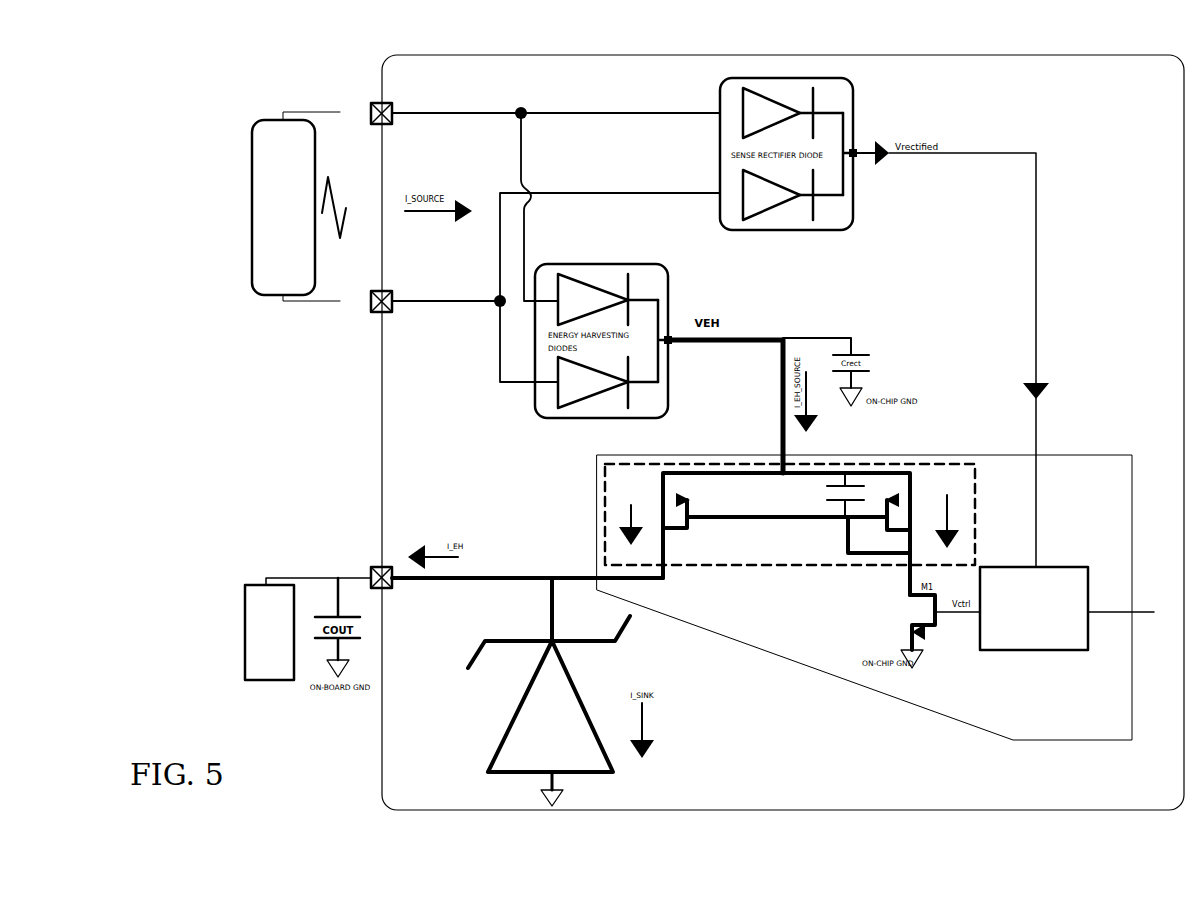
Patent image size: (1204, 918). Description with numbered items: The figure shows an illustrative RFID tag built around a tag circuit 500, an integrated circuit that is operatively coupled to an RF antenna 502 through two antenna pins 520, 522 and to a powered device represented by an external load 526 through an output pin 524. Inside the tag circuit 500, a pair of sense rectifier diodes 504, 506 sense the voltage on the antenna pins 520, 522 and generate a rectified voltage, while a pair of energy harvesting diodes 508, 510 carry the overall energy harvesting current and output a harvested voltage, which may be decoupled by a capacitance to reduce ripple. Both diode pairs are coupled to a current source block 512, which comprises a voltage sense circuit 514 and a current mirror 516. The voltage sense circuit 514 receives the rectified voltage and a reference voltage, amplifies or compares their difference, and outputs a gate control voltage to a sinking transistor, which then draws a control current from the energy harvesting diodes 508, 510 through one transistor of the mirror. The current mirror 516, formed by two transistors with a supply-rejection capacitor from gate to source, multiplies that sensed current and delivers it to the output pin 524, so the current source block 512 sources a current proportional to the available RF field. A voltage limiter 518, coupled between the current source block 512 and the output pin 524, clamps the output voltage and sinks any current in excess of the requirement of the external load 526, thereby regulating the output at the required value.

The tag circuit 500 is at (783, 432).
The RF antenna 502 is at (299, 206).
The sense rectifier diode 504 is at (793, 113).
The sense rectifier diode 506 is at (793, 195).
The energy harvesting diode 508 is at (608, 299).
The energy harvesting diode 510 is at (608, 382).
The current source block 512 is at (864, 597).
The voltage sense circuit 514 is at (1067, 608).
The current mirror 516 is at (770, 571).
The voltage limiter 518 is at (549, 692).
The antenna pin 520 is at (372, 102).
The antenna pin 522 is at (373, 312).
The output pin 524 is at (373, 567).
The external load 526 is at (308, 629).